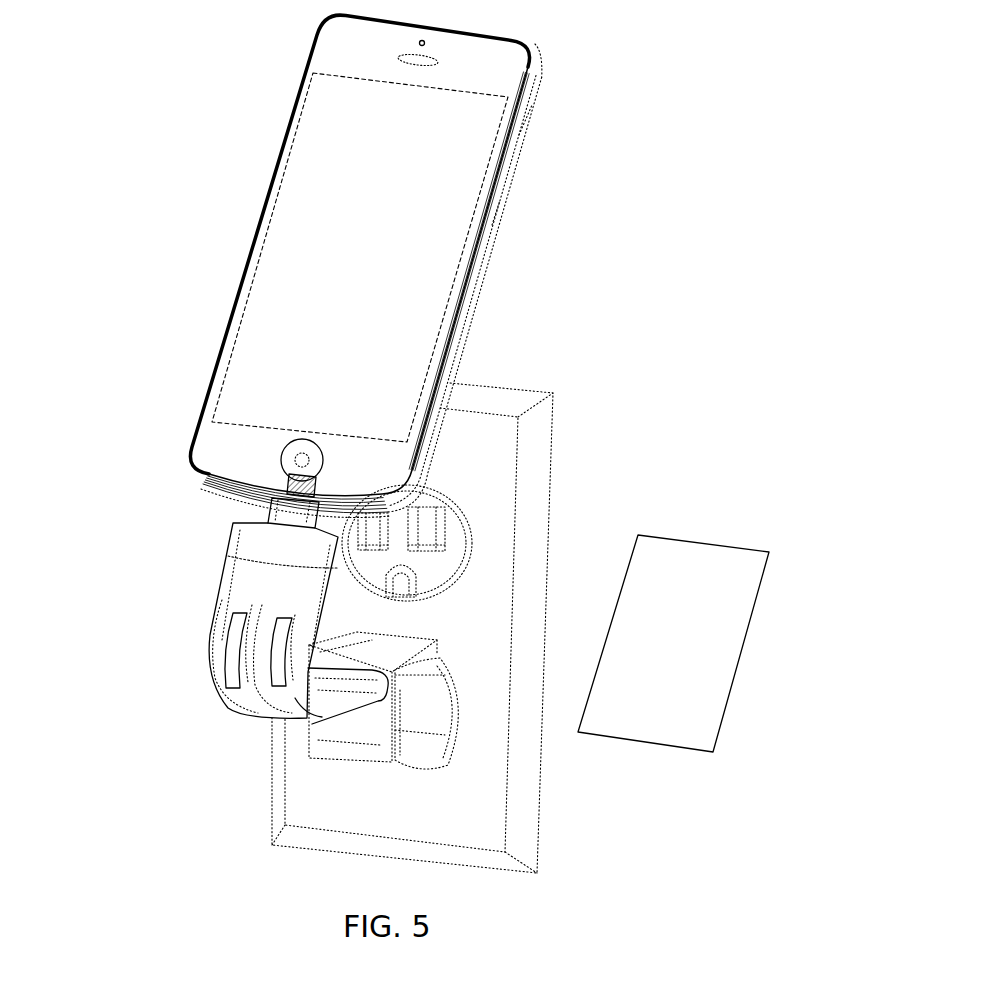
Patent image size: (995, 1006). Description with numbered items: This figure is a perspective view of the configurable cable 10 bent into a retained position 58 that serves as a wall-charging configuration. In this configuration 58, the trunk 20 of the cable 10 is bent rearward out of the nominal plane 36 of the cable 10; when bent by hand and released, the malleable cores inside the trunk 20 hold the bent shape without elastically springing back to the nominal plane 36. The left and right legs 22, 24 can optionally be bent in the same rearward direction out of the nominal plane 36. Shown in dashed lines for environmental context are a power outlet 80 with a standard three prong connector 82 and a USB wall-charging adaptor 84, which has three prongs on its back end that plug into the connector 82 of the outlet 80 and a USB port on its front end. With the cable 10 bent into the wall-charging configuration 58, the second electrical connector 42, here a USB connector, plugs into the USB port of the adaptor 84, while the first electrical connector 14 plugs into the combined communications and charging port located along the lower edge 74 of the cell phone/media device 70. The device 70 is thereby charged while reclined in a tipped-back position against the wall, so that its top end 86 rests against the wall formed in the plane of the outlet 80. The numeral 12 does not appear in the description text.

The configurable cable 10 is at (358, 620).
The holder body 12 is at (228, 558).
The first electrical connector 14 is at (322, 475).
The trunk 20 is at (267, 722).
The left leg 22 is at (225, 703).
The right leg 24 is at (314, 724).
The nominal plane 36 is at (693, 653).
The second electrical connector 42 is at (385, 672).
The retained position 58 is at (225, 632).
The cell phone/media device 70 is at (416, 263).
The lower edge 74 is at (227, 503).
The power outlet 80 is at (554, 451).
The three prong connector 82 is at (468, 720).
The USB wall-charging adaptor 84 is at (416, 716).
The top end 86 is at (528, 42).